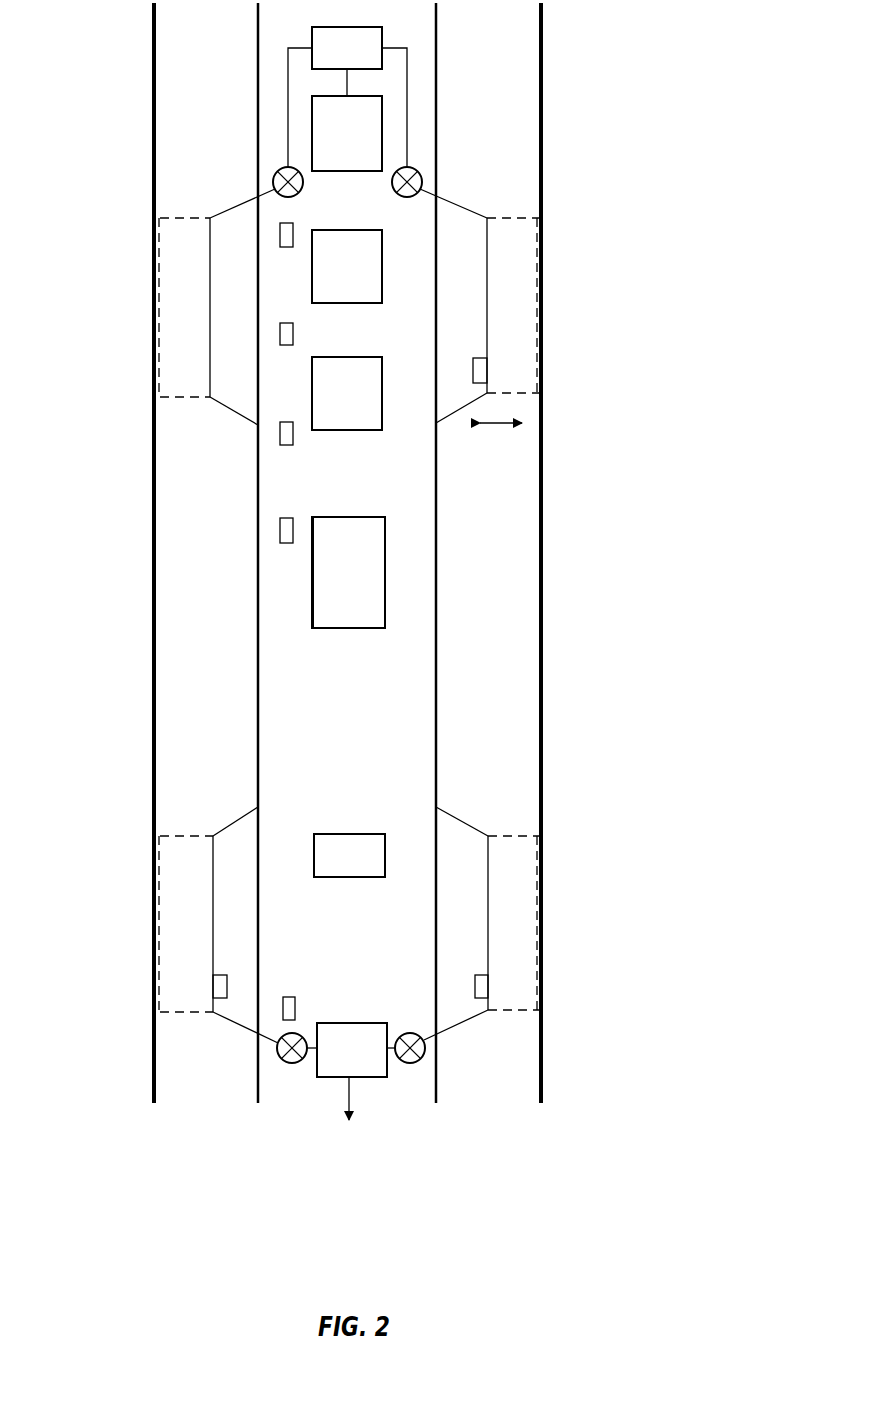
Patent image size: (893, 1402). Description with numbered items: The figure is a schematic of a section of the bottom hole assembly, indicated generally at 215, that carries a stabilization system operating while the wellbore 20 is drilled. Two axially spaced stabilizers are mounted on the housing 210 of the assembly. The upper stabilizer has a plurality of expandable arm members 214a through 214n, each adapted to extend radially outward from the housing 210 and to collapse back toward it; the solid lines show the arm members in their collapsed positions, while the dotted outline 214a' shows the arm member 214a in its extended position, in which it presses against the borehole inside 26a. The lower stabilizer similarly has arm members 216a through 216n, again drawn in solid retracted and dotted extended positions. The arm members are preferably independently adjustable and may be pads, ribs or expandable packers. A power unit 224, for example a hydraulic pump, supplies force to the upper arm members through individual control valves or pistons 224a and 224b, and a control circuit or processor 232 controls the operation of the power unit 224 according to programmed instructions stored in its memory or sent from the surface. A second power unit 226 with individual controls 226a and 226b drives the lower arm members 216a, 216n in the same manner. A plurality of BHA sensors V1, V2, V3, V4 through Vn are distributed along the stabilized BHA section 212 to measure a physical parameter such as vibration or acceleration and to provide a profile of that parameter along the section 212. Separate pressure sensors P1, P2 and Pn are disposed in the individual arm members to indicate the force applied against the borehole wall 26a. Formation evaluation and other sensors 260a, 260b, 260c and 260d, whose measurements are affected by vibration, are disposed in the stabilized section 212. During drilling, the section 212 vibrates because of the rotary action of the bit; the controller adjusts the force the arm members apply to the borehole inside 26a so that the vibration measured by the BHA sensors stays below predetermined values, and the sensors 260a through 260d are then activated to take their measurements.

The wellbore 20 is at (218, 552).
The borehole inside 26a is at (503, 553).
The housing 210 is at (475, 553).
The BHA section 212 is at (370, 510).
The downhole tool assembly 215 is at (126, 963).
The power unit 224 is at (368, 63).
The control valve 224a is at (452, 178).
The control valve 224b is at (240, 178).
The processor 232 is at (368, 148).
The arm member 214a is at (488, 298).
The upper right packer extended position 214a' is at (585, 304).
The arm member 214n is at (208, 339).
The arm member 216a is at (482, 909).
The arm member 216n is at (218, 906).
The power unit 226 is at (373, 1062).
The individual control 226a is at (454, 1062).
The individual control 226b is at (248, 1062).
The formation evaluation sensor 260a is at (375, 280).
The formation evaluation sensor 260b is at (375, 407).
The formation evaluation sensor 260c is at (375, 585).
The formation evaluation sensor 260d is at (376, 868).
The BHA sensor V1 is at (292, 222).
The BHA sensor V2 is at (295, 330).
The BHA sensor V3 is at (295, 432).
The BHA sensor V4 is at (288, 515).
The BHA sensor Vn is at (297, 1002).
The pressure sensor P1 is at (477, 973).
The pressure sensor P2 is at (220, 973).
The pressure sensor Pn is at (477, 358).